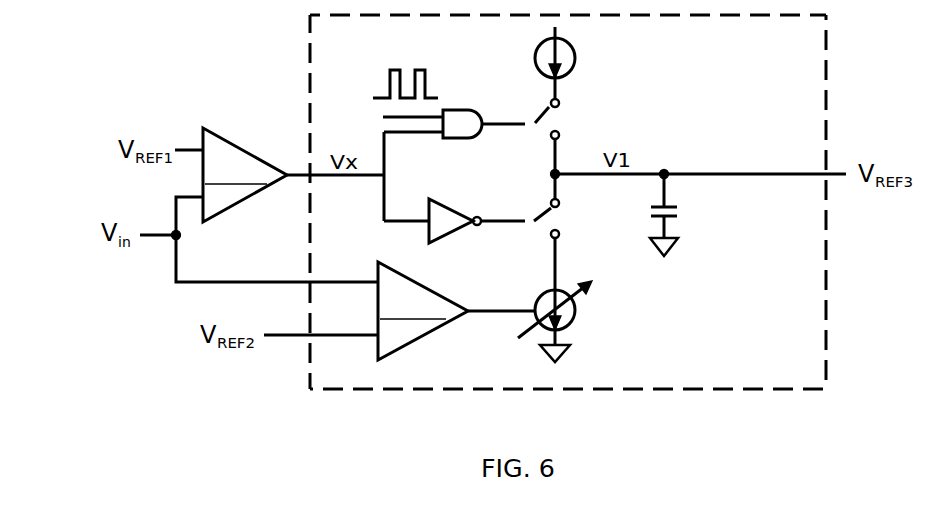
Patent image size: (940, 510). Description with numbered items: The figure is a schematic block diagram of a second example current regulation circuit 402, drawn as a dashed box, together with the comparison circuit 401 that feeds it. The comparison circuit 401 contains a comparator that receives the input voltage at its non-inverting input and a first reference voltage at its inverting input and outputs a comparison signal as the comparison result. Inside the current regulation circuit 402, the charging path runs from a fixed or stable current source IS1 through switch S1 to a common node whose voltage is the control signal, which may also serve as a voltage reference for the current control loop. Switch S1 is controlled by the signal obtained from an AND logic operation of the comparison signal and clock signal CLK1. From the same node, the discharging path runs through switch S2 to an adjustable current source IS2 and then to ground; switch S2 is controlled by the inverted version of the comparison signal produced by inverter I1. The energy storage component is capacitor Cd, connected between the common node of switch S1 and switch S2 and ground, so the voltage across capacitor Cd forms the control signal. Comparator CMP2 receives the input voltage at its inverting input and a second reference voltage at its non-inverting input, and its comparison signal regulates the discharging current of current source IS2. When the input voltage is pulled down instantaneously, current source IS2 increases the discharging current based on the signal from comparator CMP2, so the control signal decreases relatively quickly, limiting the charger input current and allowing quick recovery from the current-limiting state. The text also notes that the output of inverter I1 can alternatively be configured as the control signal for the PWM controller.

The comparison circuit 401 is at (214, 132).
The current regulation circuit 402 is at (568, 202).
The switch S1 is at (562, 119).
The switch S2 is at (562, 218).
The inverter I1 is at (437, 225).
The clock signal CLK1 is at (422, 104).
The current source IS1 is at (570, 63).
The current source IS2 is at (564, 300).
The capacitor Cd is at (679, 213).
The comparator CMP2 is at (456, 311).